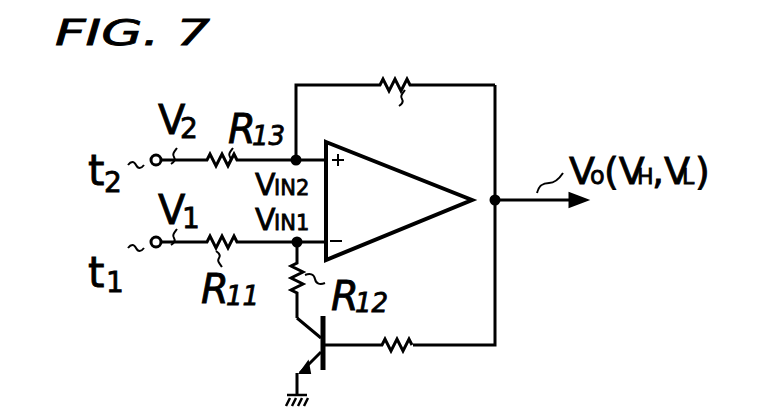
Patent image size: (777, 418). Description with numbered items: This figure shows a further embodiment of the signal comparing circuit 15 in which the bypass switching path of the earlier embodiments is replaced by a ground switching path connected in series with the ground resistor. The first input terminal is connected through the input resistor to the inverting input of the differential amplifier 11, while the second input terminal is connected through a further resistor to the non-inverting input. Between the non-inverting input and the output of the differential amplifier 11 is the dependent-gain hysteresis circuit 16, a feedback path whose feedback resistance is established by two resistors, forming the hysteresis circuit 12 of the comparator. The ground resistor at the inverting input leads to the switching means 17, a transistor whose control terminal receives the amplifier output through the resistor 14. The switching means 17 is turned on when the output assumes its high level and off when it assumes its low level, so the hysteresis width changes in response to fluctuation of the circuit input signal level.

The differential amplifier 11 is at (440, 186).
The hysteresis circuit 12 is at (497, 300).
The resistor 14 is at (412, 350).
The signal comparing circuit 15 is at (315, 66).
The dependent-gain hysteresis circuit 16 is at (497, 127).
The switching means 17 is at (326, 360).